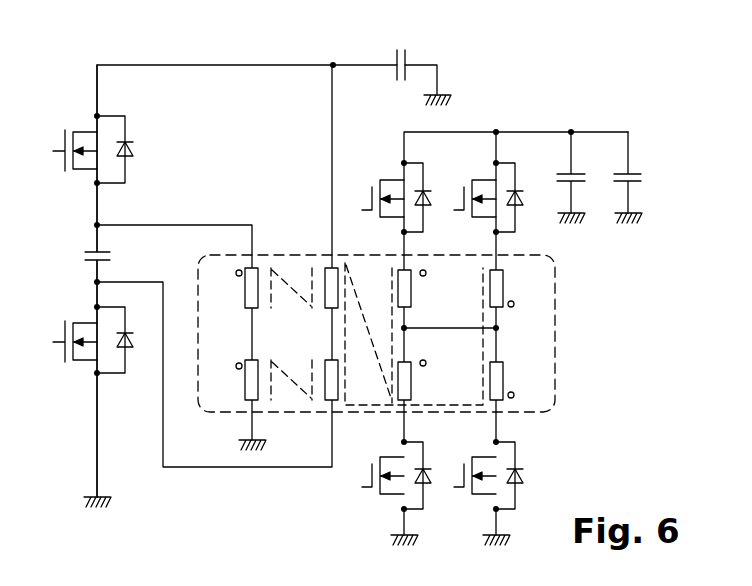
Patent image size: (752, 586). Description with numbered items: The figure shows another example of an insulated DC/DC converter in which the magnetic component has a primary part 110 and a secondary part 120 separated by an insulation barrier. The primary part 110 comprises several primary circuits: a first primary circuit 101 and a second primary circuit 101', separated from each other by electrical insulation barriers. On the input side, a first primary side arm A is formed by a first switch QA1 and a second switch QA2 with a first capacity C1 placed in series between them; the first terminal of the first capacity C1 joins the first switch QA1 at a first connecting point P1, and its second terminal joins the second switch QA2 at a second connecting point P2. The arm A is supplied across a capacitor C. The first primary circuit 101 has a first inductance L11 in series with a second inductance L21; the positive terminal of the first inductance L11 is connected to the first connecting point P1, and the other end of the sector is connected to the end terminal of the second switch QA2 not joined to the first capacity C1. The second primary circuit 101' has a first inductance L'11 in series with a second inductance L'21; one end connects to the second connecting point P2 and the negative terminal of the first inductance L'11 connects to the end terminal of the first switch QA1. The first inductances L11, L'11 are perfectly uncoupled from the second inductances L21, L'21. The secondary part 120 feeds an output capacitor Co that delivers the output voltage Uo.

The primary side arm A is at (72, 91).
The first switch QA1 is at (72, 170).
The second switch QA2 is at (80, 363).
The first connecting point P1 is at (88, 226).
The second connecting point P2 is at (90, 283).
The first capacity C1 is at (111, 256).
The input capacitor C is at (399, 53).
The primary part 110 is at (264, 253).
The first primary circuit 101 is at (279, 339).
The second primary circuit 101' is at (373, 334).
The first inductance L11 is at (246, 267).
The second inductance L21 is at (246, 392).
The first inductance L'11 is at (315, 260).
The second inductance L'21 is at (350, 412).
The secondary part 120 is at (518, 328).
The output capacitor Co is at (576, 177).
The output voltage Uo is at (634, 177).